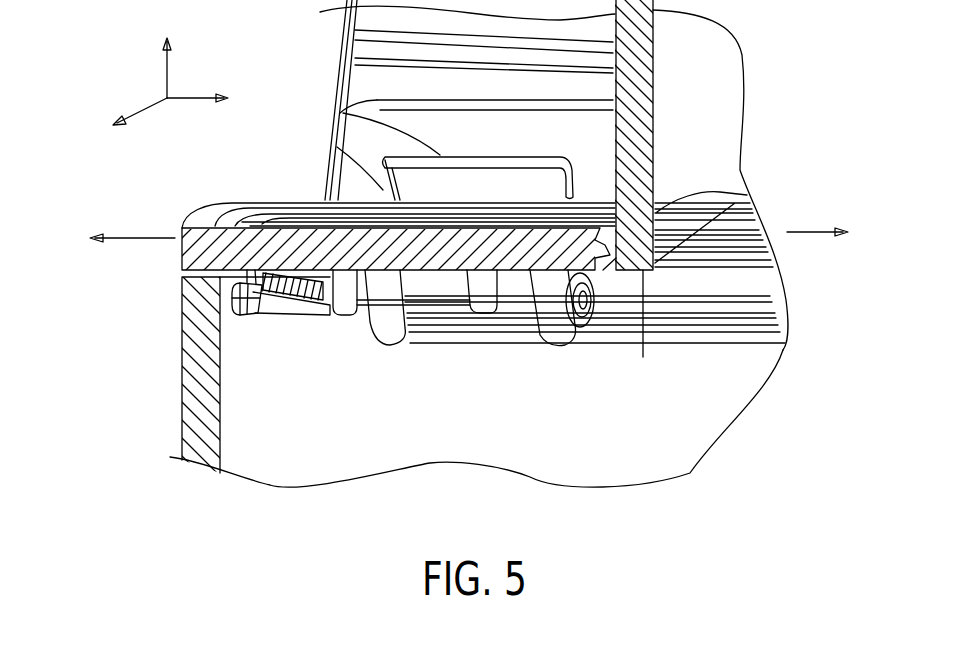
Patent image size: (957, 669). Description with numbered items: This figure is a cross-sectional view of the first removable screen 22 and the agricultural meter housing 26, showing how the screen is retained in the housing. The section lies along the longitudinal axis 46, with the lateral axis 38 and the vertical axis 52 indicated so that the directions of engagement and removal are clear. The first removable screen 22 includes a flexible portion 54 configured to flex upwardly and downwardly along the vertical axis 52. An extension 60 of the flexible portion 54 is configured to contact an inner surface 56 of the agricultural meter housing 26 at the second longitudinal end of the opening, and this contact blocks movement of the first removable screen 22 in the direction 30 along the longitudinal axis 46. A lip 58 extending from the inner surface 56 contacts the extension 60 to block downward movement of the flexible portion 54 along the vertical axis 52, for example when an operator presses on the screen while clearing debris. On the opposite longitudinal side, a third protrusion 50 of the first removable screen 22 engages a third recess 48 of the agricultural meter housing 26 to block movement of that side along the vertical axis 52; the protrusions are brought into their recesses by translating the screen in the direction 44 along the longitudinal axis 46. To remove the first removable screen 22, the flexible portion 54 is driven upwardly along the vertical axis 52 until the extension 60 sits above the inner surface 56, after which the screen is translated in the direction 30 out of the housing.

The first removable screen 22 is at (208, 226).
The agricultural meter housing 26 is at (340, 82).
The direction 30 is at (130, 236).
The lateral axis 38 is at (148, 110).
The direction 44 is at (812, 232).
The longitudinal axis 46 is at (192, 98).
The third recess 48 is at (644, 285).
The third protrusion 50 is at (603, 262).
The vertical axis 52 is at (170, 72).
The flexible portion 54 is at (262, 203).
The inner surface 56 is at (237, 356).
The lip 58 is at (298, 302).
The extension 60 is at (276, 300).